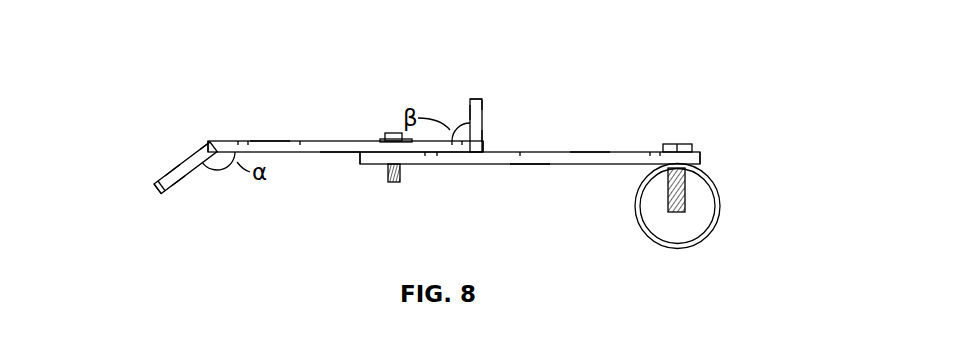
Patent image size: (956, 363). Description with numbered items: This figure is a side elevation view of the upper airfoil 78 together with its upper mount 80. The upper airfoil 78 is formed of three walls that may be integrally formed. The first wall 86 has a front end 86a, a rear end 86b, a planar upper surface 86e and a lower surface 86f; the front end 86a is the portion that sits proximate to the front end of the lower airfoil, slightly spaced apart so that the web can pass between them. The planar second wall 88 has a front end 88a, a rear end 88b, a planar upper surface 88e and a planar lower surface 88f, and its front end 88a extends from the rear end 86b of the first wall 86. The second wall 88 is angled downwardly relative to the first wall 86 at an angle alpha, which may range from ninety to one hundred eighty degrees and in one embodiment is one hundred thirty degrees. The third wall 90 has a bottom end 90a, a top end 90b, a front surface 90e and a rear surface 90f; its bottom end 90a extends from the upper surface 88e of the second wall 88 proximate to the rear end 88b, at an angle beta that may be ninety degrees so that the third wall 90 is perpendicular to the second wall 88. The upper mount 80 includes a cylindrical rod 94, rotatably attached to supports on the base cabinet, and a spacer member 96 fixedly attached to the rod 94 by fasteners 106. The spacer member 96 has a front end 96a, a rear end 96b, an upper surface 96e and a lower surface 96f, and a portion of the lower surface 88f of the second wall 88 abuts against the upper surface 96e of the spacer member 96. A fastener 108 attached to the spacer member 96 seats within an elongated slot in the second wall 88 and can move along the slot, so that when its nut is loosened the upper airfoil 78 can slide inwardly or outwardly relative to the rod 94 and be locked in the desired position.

The upper airfoil 78 is at (138, 84).
The upper mount 80 is at (667, 112).
The first wall 86 is at (200, 166).
The front end 86a is at (153, 188).
The rear end 86b is at (211, 143).
The upper surface 86e is at (170, 173).
The lower surface 86f is at (177, 188).
The second wall 88 is at (313, 153).
The front end 88a is at (210, 141).
The rear end 88b is at (486, 150).
The upper surface 88e is at (270, 141).
The lower surface 88f is at (342, 153).
The third wall 90 is at (470, 122).
The bottom end 90a is at (484, 140).
The top end 90b is at (475, 99).
The front surface 90e is at (470, 112).
The rear surface 90f is at (483, 106).
The cylindrical rod 94 is at (721, 205).
The spacer member 96 is at (582, 164).
The front end 96a is at (362, 160).
The rear end 96b is at (702, 158).
The upper surface 96e is at (590, 152).
The lower surface 96f is at (531, 164).
The fasteners 106 is at (684, 196).
The fastener 108 is at (397, 181).